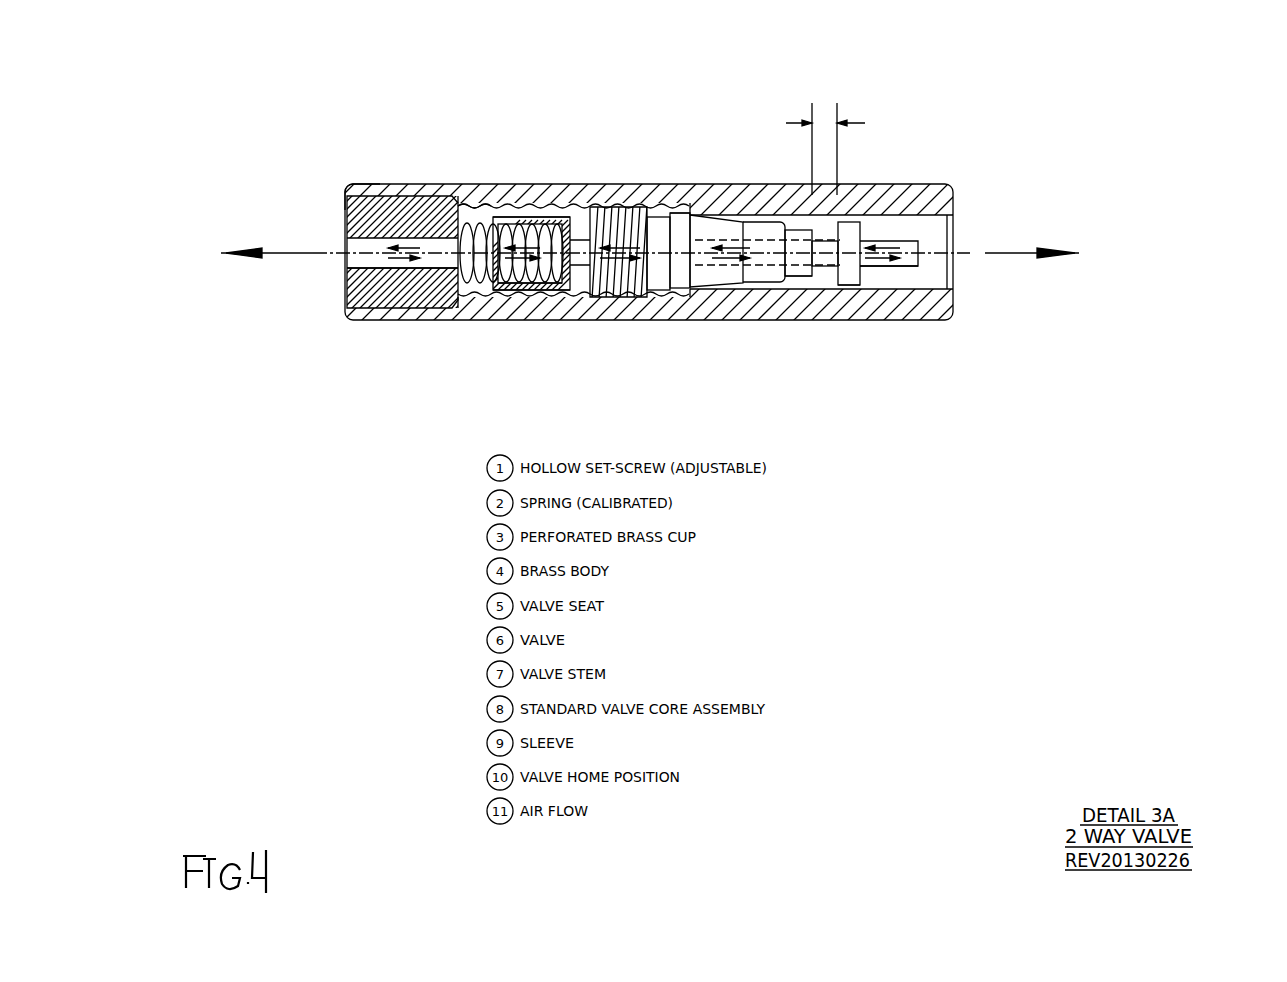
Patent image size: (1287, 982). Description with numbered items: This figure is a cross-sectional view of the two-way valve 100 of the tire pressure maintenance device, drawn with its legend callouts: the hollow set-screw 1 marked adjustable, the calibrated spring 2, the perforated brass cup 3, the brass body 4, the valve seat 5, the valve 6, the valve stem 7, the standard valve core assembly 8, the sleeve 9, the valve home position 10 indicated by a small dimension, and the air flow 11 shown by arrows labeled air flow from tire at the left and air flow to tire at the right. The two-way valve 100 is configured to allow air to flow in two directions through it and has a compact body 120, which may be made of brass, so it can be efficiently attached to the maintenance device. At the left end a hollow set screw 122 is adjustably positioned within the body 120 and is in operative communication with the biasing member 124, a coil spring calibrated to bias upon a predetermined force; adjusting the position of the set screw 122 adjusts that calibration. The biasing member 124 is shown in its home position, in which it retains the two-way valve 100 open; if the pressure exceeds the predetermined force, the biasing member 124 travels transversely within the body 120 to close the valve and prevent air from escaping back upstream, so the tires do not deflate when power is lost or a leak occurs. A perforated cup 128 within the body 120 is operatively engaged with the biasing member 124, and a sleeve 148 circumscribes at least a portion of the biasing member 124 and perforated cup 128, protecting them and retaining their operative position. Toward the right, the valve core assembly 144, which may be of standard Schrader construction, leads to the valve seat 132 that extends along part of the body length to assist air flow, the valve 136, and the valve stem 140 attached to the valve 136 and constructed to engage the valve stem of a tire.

The hollow set-screw (adjustable) 1 is at (345, 213).
The spring (calibrated) 2 is at (488, 216).
The perforated brass cup 3 is at (578, 217).
The brass body 4 is at (653, 184).
The valve seat 5 is at (813, 262).
The valve 6 is at (894, 268).
The valve stem 7 is at (832, 264).
The standard valve core assembly 8 is at (680, 213).
The sleeve 9 is at (528, 292).
The valve home position 10 is at (824, 121).
The air flow 11 is at (637, 253).
The two-way valve 100 is at (922, 158).
The body 120 is at (370, 178).
The hollow set screw 122 is at (365, 284).
The biasing member 124 is at (463, 178).
The perforated cup 128 is at (608, 114).
The valve seat 132 is at (870, 391).
The valve 136 is at (982, 378).
The valve stem 140 is at (922, 382).
The valve core assembly 144 is at (738, 112).
The sleeve 148 is at (556, 387).